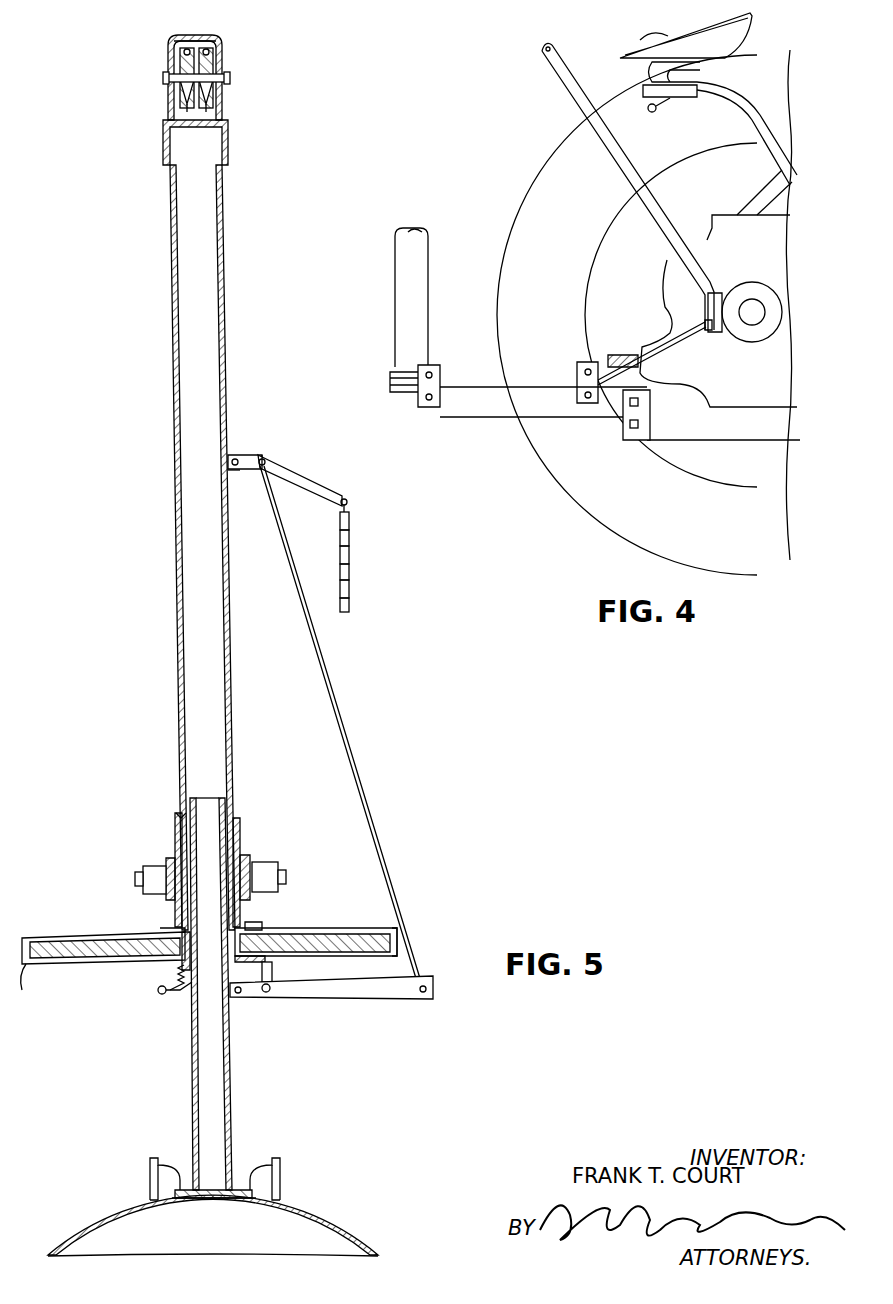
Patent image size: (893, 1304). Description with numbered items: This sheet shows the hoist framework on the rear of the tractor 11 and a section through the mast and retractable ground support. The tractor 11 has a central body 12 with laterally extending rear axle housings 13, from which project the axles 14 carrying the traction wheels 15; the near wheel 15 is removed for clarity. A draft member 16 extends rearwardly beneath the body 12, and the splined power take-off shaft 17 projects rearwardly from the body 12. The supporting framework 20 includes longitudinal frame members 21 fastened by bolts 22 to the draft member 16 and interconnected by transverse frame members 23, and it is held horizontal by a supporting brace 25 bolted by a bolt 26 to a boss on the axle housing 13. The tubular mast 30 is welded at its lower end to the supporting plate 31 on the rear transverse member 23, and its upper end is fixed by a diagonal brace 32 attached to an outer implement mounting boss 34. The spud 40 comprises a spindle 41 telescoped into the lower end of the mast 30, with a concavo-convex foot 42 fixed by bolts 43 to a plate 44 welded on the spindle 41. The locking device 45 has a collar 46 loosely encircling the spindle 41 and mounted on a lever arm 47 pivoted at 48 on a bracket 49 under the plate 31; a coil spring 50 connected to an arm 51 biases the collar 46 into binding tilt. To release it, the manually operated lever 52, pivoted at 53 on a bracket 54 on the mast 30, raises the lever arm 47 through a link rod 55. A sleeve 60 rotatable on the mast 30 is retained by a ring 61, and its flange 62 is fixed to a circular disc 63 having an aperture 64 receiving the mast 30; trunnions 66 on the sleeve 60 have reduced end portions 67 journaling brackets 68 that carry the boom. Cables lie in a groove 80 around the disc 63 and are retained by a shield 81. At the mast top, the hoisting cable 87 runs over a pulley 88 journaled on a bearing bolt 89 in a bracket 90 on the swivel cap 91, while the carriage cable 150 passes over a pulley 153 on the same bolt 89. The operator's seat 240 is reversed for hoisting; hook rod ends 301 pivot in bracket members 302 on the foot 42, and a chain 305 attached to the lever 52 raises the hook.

In FIG. 4, the tractor 11 is at (793, 38).
In FIG. 4, the body 12 is at (762, 244).
In FIG. 4, the rear axle housing 13 is at (746, 340).
In FIG. 4, the tractor axle 14 is at (752, 302).
In FIG. 4, the traction wheel 15 is at (762, 558).
In FIG. 4, the draft member 16 is at (737, 428).
In FIG. 4, the power take-off shaft 17 is at (622, 354).
In FIG. 4, the supporting framework 20 is at (560, 428).
In FIG. 4, the longitudinal frame member 21 is at (484, 418).
In FIG. 4, the bolt 22 is at (640, 428).
In FIG. 4, the transverse frame member 23 is at (432, 404).
In FIG. 4, the supporting brace 25 is at (690, 336).
In FIG. 4, the bolt 26 is at (704, 323).
In FIG. 5, the tubular mast 30 is at (176, 400).
In FIG. 4, the tubular mast 30 is at (418, 288).
In FIG. 5, the supporting plate 31 is at (266, 948).
In FIG. 4, the supporting plate 31 is at (390, 384).
In FIG. 4, the diagonal brace 32 is at (618, 162).
In FIG. 4, the outer implement mounting boss 34 is at (716, 293).
In FIG. 5, the retractable ground engaging support 40 is at (183, 1092).
In FIG. 5, the spindle 41 is at (231, 1060).
In FIG. 5, the ground engaging foot 42 is at (322, 1222).
In FIG. 5, the bolt 43 is at (200, 1186).
In FIG. 5, the plate 44 is at (210, 1198).
In FIG. 5, the locking device 45 is at (178, 1016).
In FIG. 5, the collar 46 is at (240, 994).
In FIG. 5, the lever arm 47 is at (306, 997).
In FIG. 5, the pivot 48 is at (270, 992).
In FIG. 5, the bracket 49 is at (273, 973).
In FIG. 5, the coil spring 50 is at (166, 978).
In FIG. 5, the arm 51 is at (162, 994).
In FIG. 5, the manually operated lever 52 is at (306, 480).
In FIG. 5, the pivot 53 is at (238, 454).
In FIG. 5, the bracket 54 is at (236, 470).
In FIG. 5, the link rod 55 is at (357, 738).
In FIG. 5, the sleeve 60 is at (243, 835).
In FIG. 5, the ring 61 is at (237, 815).
In FIG. 5, the flange 62 is at (256, 930).
In FIG. 5, the circular disc 63 is at (106, 944).
In FIG. 5, the aperture 64 is at (188, 955).
In FIG. 5, the trunnion 66 is at (157, 878).
In FIG. 5, the end portion 67 is at (133, 878).
In FIG. 5, the bracket 68 is at (148, 864).
In FIG. 5, the groove 80 is at (23, 985).
In FIG. 5, the shield 81 is at (398, 945).
In FIG. 5, the cable 87 is at (172, 55).
In FIG. 5, the pulley 88 is at (180, 100).
In FIG. 5, the bearing bolt 89 is at (231, 78).
In FIG. 5, the bracket 90 is at (222, 52).
In FIG. 5, the swivel cap 91 is at (229, 148).
In FIG. 5, the cable 150 is at (196, 52).
In FIG. 5, the pulley 153 is at (214, 98).
In FIG. 4, the operator's seat 240 is at (696, 18).
In FIG. 5, the turned end 301 is at (166, 1166).
In FIG. 5, the bracket member 302 is at (148, 1182).
In FIG. 5, the chain 305 is at (351, 560).